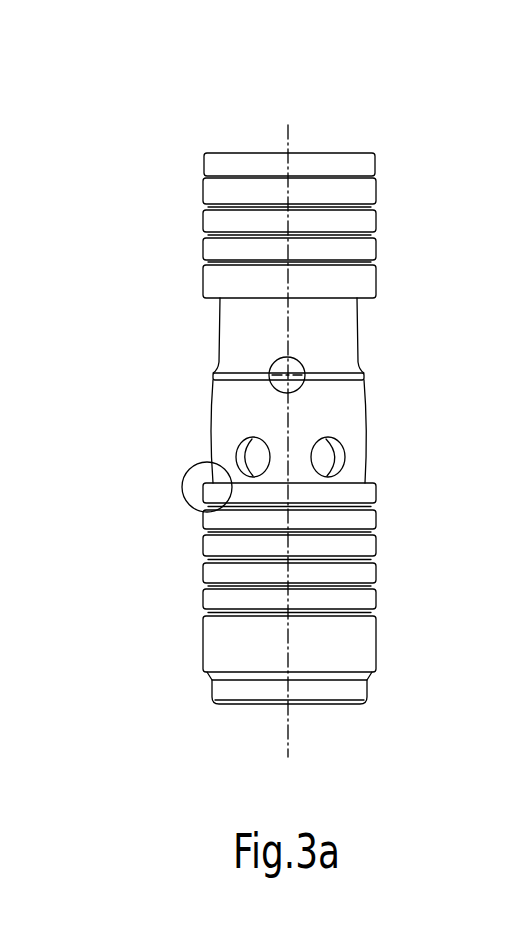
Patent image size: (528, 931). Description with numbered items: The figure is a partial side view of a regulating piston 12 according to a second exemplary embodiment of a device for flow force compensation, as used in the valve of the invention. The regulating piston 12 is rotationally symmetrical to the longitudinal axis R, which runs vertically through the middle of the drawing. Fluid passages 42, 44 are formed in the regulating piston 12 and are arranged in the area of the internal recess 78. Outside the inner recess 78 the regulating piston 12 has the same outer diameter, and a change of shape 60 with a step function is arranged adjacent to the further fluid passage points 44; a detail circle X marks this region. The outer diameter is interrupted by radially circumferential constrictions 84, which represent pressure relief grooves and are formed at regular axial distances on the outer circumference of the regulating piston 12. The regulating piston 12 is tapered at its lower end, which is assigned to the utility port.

The regulating piston 12 is at (370, 142).
The constrictions 84 is at (376, 207).
The internal recess 78 is at (217, 332).
The fluid passage 42 is at (289, 374).
The further fluid passage points 44 is at (247, 462).
The change of shape 60 is at (207, 481).
The detail circle X is at (183, 490).
The longitudinal axis R is at (288, 737).